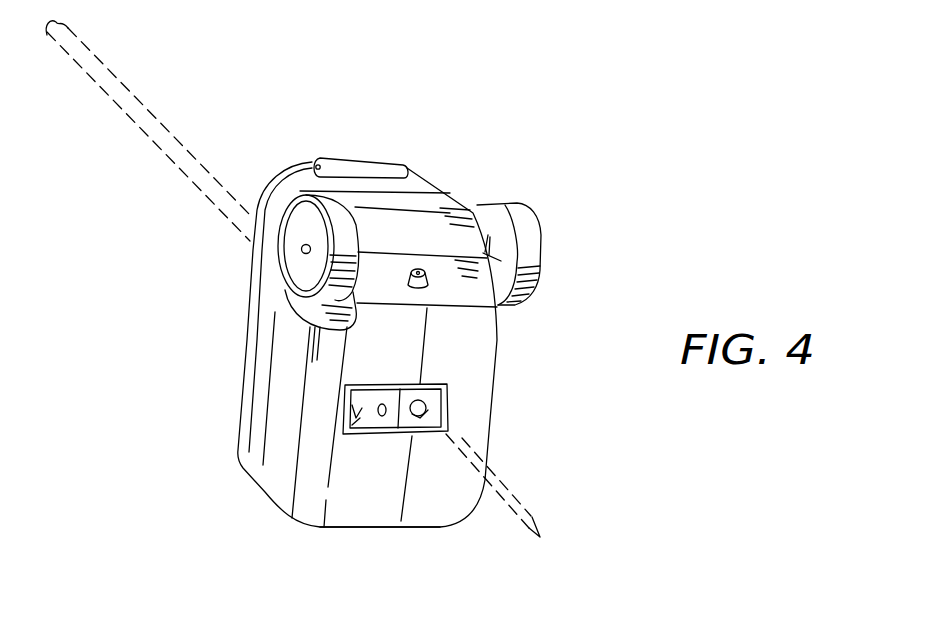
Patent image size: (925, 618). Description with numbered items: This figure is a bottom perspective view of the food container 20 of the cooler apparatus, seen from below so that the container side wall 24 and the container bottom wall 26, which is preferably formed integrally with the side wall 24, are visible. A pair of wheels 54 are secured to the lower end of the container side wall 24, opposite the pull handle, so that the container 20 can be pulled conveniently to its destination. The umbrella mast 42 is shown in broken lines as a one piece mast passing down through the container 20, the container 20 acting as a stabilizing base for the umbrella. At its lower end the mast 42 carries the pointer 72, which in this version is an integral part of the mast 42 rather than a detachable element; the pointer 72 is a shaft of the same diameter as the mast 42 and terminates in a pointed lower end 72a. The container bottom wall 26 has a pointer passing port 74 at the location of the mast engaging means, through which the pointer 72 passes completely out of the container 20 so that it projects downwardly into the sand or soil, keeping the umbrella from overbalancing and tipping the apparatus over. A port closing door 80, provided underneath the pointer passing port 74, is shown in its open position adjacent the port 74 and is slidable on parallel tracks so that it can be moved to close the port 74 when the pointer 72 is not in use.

The food container 20 is at (595, 217).
The container side wall 24 is at (438, 198).
The container bottom wall 26 is at (352, 507).
The umbrella mast 42 is at (159, 132).
The wheels 54 is at (290, 250).
The pointer 72 is at (476, 459).
The pointed lower end 72a is at (535, 521).
The pointer passing port 74 is at (428, 420).
The port closing door 80 is at (358, 415).